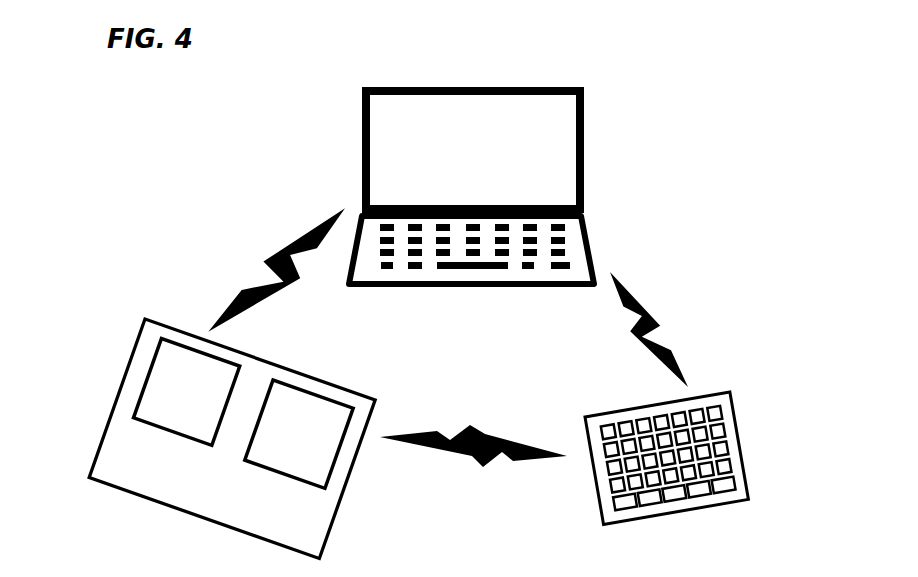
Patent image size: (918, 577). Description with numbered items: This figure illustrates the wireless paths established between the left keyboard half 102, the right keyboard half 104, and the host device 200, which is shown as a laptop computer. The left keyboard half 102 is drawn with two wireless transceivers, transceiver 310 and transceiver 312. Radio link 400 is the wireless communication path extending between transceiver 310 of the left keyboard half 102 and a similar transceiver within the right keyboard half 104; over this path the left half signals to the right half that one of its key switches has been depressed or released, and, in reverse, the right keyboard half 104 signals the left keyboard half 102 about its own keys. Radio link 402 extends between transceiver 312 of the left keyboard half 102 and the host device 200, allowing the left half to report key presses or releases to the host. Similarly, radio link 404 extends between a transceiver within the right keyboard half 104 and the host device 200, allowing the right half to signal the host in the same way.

The host device 200 is at (578, 178).
The radio link 402 is at (275, 252).
The radio link 404 is at (647, 303).
The radio link 400 is at (447, 432).
The left keyboard half 102 is at (115, 398).
The transceiver 312 is at (152, 425).
The transceiver 310 is at (307, 485).
The right keyboard half 104 is at (740, 450).